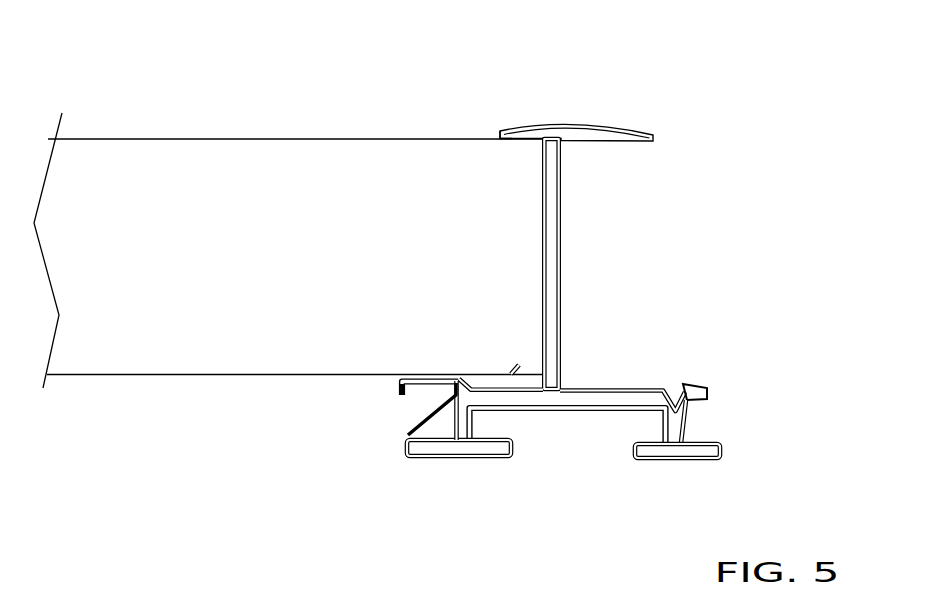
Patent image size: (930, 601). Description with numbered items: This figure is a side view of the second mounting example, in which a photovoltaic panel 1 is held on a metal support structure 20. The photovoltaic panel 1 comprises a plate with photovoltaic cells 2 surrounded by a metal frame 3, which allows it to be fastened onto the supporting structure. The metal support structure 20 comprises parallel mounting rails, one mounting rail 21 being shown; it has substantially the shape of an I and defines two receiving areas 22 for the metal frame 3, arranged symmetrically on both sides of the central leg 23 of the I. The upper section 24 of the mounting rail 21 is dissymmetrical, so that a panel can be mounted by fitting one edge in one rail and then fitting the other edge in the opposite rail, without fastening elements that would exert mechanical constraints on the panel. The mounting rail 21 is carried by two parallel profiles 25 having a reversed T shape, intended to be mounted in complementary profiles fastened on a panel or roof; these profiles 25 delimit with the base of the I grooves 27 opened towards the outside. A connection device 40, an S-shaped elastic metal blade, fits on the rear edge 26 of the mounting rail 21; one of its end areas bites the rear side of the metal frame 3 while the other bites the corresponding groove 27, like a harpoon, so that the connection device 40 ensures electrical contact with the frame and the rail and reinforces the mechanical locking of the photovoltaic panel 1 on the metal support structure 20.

The photovoltaic panel 1 is at (377, 267).
The plate with photovoltaic cells 2 is at (288, 223).
The metal frame 3 is at (98, 165).
The metal support structure 20 is at (480, 267).
The mounting rail 21 is at (543, 93).
The receiving area 22 is at (542, 232).
The central leg 23 is at (552, 265).
The upper section 24 is at (516, 126).
The profile 25 is at (440, 453).
The rear edge 26 is at (443, 385).
The groove 27 is at (438, 428).
The connection device 40 is at (349, 391).